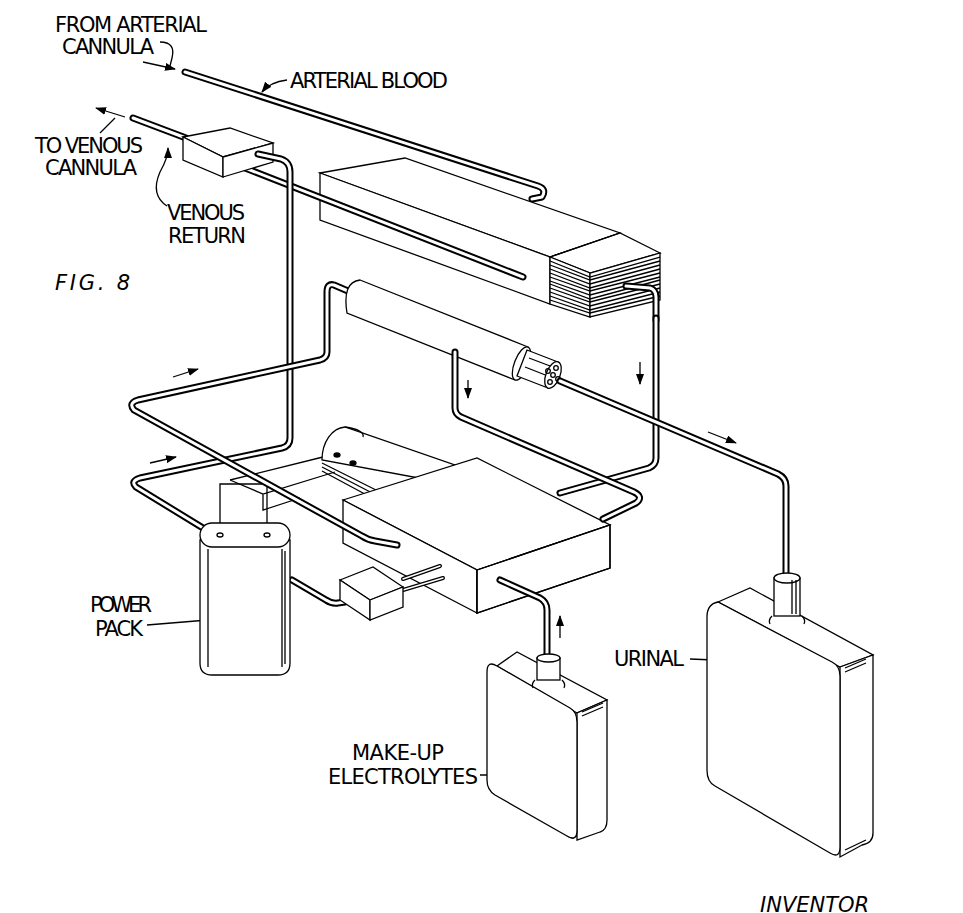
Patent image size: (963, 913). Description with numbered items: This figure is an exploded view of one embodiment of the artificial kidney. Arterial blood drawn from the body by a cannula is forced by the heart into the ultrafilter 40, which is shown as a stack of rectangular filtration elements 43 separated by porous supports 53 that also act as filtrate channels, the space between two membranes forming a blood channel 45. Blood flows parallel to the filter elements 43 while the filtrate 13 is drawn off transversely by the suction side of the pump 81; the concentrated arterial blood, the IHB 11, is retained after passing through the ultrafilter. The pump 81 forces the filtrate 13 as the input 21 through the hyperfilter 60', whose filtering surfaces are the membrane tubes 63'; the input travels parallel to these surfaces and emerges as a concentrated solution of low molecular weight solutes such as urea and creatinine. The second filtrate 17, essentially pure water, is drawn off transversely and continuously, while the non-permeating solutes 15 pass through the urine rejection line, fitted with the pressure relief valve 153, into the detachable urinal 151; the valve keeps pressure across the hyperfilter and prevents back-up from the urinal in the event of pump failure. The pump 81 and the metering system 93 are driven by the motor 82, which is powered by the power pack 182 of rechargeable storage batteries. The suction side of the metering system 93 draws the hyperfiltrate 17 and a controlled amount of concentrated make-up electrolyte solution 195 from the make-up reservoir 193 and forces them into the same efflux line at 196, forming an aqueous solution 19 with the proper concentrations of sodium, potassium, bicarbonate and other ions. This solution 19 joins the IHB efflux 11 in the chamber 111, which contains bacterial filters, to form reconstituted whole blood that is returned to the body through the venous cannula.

The chamber 111 is at (236, 140).
The ultrafilter 40 is at (443, 206).
The concentrated arterial blood IHB 11 is at (420, 236).
The filtration elements 43 is at (652, 254).
The porous supports 53 is at (668, 254).
The blood channel 45 is at (669, 286).
The filtrate 13 is at (660, 332).
The hyperfilter 60' is at (440, 331).
The membrane tubes 63' is at (560, 364).
The second filtrate 17 is at (452, 386).
The aqueous solution 19 is at (287, 301).
The motor 82 is at (380, 460).
The input to the hyperfilter 21 is at (300, 508).
The pump 81 is at (484, 527).
The metering system 93 is at (583, 573).
The power pack 182 is at (258, 590).
The efflux line junction 196 is at (386, 606).
The concentrated make-up electrolyte solution 195 is at (530, 601).
The make-up reservoir 193 is at (554, 749).
The pressure relief valve 153 is at (800, 602).
The non-permeating solutes 15 is at (790, 525).
The urinal 151 is at (788, 718).